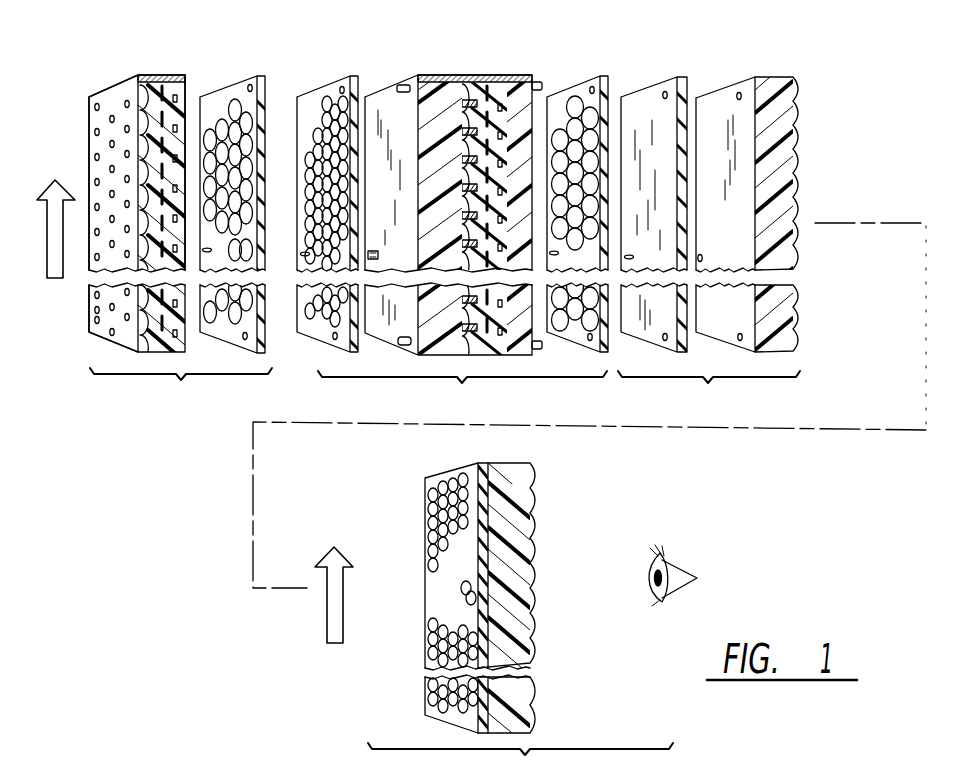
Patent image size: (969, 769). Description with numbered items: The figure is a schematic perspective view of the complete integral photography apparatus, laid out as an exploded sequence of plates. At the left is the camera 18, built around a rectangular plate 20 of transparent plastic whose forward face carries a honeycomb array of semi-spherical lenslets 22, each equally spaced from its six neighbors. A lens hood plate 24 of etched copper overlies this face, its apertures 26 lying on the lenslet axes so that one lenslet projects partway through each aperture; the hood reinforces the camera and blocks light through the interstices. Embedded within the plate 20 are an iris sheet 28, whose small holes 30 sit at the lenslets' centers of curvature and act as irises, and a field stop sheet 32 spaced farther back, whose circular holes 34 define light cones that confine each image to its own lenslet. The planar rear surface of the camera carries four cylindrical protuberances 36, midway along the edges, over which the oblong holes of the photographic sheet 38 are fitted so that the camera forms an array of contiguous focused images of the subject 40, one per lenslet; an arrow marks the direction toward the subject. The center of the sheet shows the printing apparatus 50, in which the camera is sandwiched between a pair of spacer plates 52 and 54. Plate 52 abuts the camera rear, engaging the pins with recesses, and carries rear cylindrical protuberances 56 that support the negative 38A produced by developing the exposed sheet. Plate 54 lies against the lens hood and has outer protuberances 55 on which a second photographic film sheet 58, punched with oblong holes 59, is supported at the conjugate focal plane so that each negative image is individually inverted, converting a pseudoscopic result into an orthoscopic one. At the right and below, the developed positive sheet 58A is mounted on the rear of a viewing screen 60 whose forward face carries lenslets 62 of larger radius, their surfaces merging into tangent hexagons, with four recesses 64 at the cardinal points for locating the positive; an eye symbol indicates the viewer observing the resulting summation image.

The camera 18 is at (155, 190).
The rectangular plate 20 is at (152, 90).
The semi-spherical lenslets 22 is at (97, 128).
The lens hood plate 24 is at (80, 223).
The apertures 26 is at (96, 310).
The iris sheet 28 is at (167, 343).
The holes 30 is at (177, 76).
The field stop sheet 32 is at (187, 83).
The circular holes 34 is at (188, 101).
The cylindrical protuberances 36 is at (187, 338).
The photographic sheet 38 is at (261, 337).
The negative 38A is at (602, 73).
The subject 40 is at (55, 225).
The printing apparatus 50 is at (475, 190).
The spacer plate 52 is at (520, 78).
The spacer plate 54 is at (438, 78).
The protuberances 55 is at (405, 85).
The cylindrical protuberances 56 is at (627, 185).
The photographic film sheet 58 is at (319, 180).
The developed positive sheet 58A is at (645, 92).
The oblong holes 59 is at (345, 88).
The viewing screen 60 is at (616, 373).
The lenslets 62 is at (788, 133).
The recesses 64 is at (699, 255).